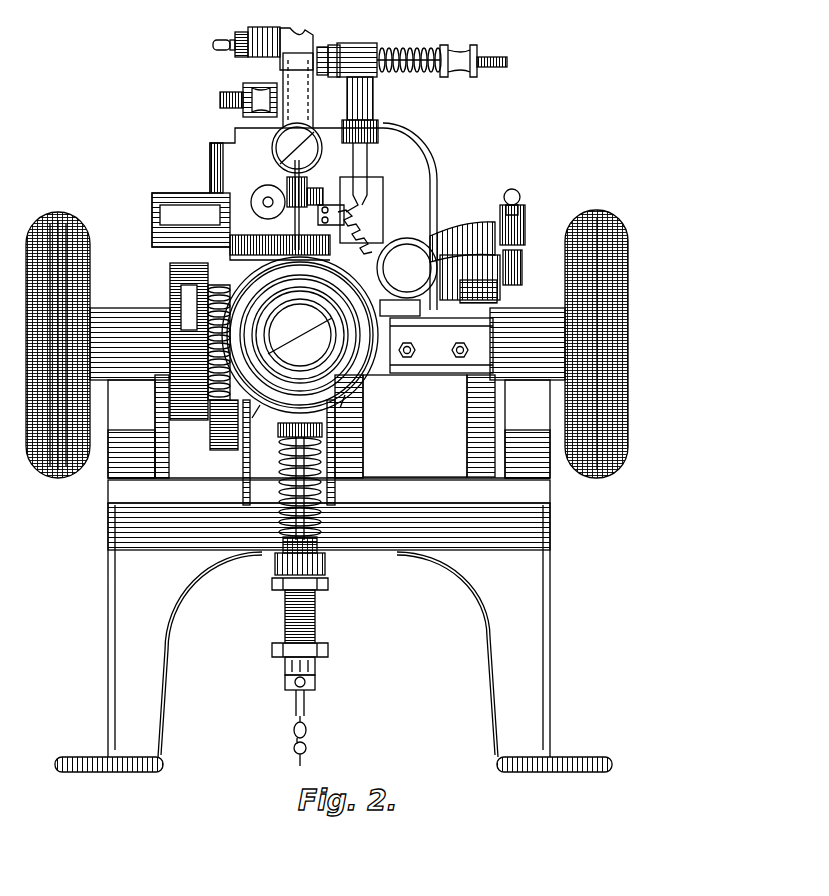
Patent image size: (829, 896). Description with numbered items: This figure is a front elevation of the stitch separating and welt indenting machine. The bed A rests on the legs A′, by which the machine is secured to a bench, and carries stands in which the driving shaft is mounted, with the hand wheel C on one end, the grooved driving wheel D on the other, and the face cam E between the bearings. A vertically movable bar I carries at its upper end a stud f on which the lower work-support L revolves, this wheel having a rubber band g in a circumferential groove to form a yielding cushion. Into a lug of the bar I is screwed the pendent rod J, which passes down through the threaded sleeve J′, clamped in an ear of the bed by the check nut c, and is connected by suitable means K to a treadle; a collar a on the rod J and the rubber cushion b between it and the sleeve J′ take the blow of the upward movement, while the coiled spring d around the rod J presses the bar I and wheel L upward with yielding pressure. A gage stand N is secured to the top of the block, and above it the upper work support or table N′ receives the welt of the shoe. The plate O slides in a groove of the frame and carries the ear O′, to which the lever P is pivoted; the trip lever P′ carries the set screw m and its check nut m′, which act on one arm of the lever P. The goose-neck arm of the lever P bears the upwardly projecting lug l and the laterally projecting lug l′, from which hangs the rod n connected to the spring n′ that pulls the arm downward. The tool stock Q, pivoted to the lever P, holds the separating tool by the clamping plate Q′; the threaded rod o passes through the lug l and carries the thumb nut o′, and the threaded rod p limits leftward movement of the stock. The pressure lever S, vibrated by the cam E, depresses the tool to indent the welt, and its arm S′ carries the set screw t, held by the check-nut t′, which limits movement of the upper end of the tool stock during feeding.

The grooved driving wheel D is at (65, 345).
The hand wheel C is at (596, 335).
The face cam E is at (189, 341).
The stud f is at (300, 335).
The clamping plate Q′ is at (306, 186).
The bed A is at (329, 514).
The legs A′ is at (333, 637).
The check nut c is at (328, 588).
The threaded sleeve J′ is at (308, 616).
The rubber cushion b is at (309, 667).
The collar a is at (309, 684).
The pendent rod J is at (314, 186).
The connecting means K is at (309, 741).
The coiled spring d is at (322, 494).
The collar L′ is at (322, 432).
The lower work-support L is at (343, 409).
The rubber band g is at (257, 420).
The bar I is at (280, 476).
The upper work support or table N′ is at (280, 250).
The gage stand N is at (400, 310).
The plate O is at (478, 301).
The ear O′ is at (417, 270).
The rectangular groove k is at (470, 277).
The lever P is at (425, 215).
The trip lever P′ is at (466, 230).
The set screw m is at (521, 195).
The check nut m′ is at (522, 215).
The pressure lever S is at (246, 194).
The upwardly projecting arm S′ is at (262, 32).
The set screw t is at (223, 32).
The check-nut t′ is at (242, 33).
The threaded rod o is at (499, 61).
The thumb nut o′ is at (461, 50).
The upwardly projecting lug l is at (373, 95).
The laterally projecting lug l′ is at (378, 135).
The rod n is at (367, 168).
The spring n′ is at (372, 230).
The threaded rod p is at (223, 102).
The tool stock Q is at (297, 141).